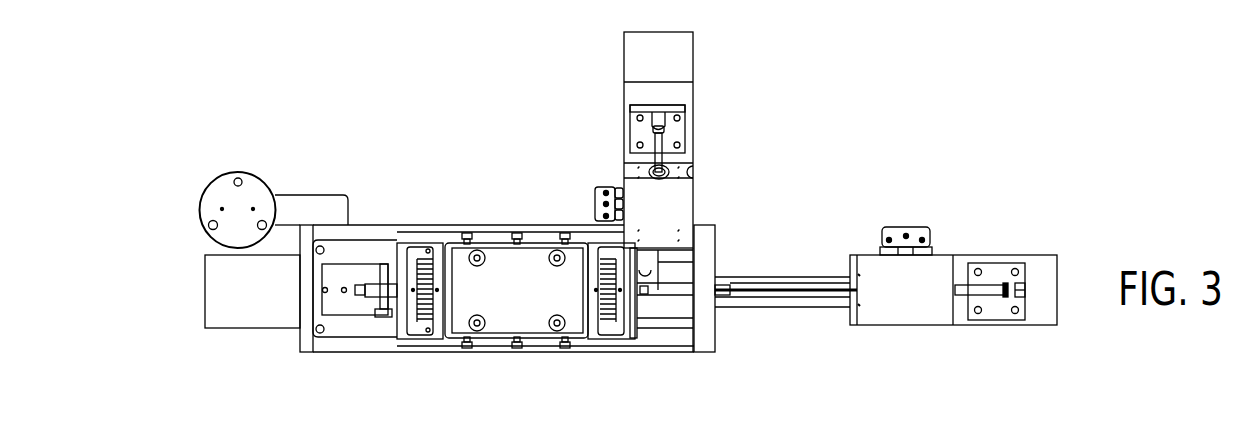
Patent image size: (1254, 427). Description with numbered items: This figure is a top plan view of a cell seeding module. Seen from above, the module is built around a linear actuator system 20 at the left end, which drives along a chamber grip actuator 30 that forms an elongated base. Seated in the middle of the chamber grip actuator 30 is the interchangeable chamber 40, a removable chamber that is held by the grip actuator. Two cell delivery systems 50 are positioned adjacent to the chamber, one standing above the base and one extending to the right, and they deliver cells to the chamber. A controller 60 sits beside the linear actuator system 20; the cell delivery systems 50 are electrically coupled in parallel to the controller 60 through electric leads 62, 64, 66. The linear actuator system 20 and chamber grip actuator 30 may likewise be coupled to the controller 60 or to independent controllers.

The linear actuator system 20 is at (247, 320).
The chamber grip actuator 30 is at (358, 347).
The interchangeable chamber 40 is at (527, 304).
The cell delivery system 50 is at (714, 109).
The controller 60 is at (252, 173).
The electric lead 62 is at (777, 287).
The electric lead 64 is at (783, 308).
The electric lead 66 is at (817, 276).